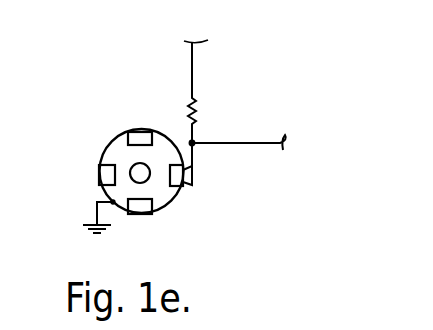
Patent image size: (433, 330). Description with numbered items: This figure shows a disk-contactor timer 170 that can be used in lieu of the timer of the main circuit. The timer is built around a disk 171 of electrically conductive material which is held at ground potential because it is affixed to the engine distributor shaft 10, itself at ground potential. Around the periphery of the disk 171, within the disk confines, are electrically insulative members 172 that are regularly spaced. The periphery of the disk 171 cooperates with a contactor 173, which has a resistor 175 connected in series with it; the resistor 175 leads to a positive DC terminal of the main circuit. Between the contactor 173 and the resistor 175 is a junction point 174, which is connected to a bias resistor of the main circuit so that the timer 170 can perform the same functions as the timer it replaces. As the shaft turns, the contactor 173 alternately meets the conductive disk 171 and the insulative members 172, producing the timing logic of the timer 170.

The disk-contactor timer 170 is at (119, 88).
The engine distributor shaft 10 is at (141, 174).
The electrically insulative members 172 is at (128, 139).
The disk 171 is at (120, 200).
The contactor 173 is at (193, 157).
The junction point 174 is at (194, 142).
The resistor 175 is at (196, 108).